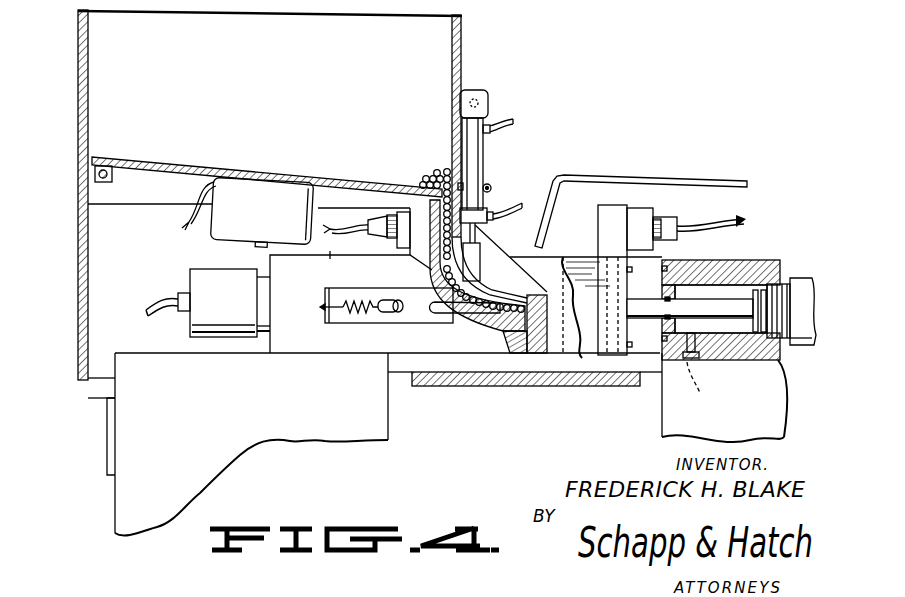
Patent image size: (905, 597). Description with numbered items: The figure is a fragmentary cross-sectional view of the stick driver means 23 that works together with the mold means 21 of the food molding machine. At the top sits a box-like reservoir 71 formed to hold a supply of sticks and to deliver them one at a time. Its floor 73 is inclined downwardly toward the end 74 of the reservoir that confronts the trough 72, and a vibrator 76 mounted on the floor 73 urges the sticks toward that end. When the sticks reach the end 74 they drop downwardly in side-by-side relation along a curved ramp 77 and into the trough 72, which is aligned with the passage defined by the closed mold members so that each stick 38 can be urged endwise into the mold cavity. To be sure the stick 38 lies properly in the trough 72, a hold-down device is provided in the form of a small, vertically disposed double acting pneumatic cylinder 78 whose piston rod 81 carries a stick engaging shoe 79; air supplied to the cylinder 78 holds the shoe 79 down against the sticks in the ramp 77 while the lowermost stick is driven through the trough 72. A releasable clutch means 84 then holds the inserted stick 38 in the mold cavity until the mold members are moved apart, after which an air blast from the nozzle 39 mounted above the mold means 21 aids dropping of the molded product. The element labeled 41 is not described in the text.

The box-like reservoir 71 is at (78, 68).
The floor 73 is at (192, 162).
The end 74 is at (455, 66).
The stick driver means 23 is at (507, 94).
The double acting pneumatic cylinder 78 is at (480, 158).
The nozzle 39 is at (546, 198).
The mold means 21 is at (571, 248).
The vibrator 76 is at (248, 213).
The piston rod 81 is at (478, 232).
The curved ramp 77 is at (435, 271).
The stick engaging shoe 79 is at (476, 259).
The releasable clutch means 84 is at (434, 328).
The stick 38 is at (508, 356).
The trough 72 is at (533, 355).
The pin 41 is at (608, 356).